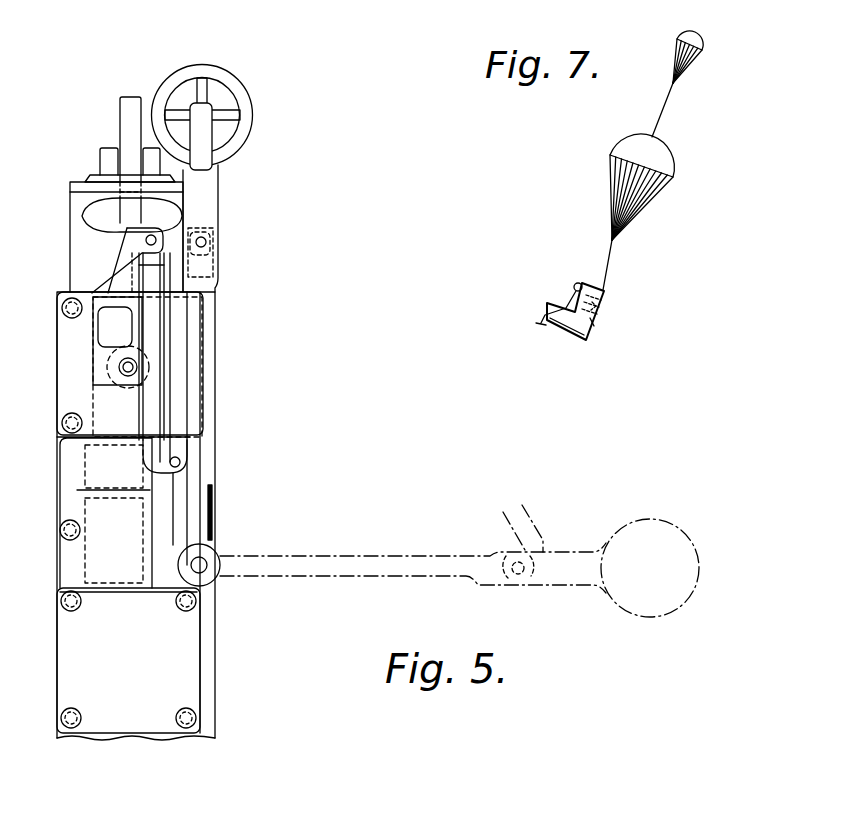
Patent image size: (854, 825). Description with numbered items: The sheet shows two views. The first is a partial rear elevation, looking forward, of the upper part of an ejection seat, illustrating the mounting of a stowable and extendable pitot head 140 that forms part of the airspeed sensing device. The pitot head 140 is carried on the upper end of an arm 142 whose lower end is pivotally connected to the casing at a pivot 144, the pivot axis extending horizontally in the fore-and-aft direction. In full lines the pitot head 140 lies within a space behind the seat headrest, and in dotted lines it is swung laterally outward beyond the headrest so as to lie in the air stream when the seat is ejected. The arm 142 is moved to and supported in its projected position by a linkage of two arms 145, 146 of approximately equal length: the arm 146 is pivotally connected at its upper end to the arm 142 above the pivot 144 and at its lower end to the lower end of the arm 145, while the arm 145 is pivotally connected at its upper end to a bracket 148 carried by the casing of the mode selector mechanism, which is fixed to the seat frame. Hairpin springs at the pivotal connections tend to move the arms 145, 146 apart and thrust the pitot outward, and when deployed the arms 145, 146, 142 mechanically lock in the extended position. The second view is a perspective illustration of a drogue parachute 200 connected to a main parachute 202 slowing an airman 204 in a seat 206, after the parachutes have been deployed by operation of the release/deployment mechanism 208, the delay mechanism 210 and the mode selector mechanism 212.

In FIG. 5, the pitot head 140 is at (195, 70).
In FIG. 5, the arm 142 is at (212, 193).
In FIG. 5, the pivot 144 is at (203, 568).
In FIG. 5, the arm 145 is at (154, 408).
In FIG. 5, the arm 146 is at (175, 368).
In FIG. 5, the bracket 148 is at (115, 270).
In FIG. 7, the drogue parachute 200 is at (683, 40).
In FIG. 7, the main parachute 202 is at (628, 148).
In FIG. 7, the airman 204 is at (552, 305).
In FIG. 7, the seat 206 is at (577, 335).
In FIG. 7, the release/deployment mechanism 208 is at (603, 292).
In FIG. 7, the delay mechanism 210 is at (600, 305).
In FIG. 7, the mode selector mechanism 212 is at (593, 325).